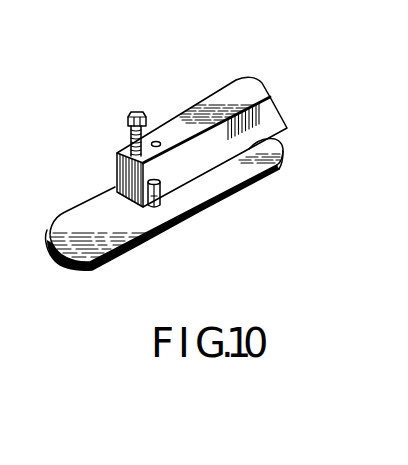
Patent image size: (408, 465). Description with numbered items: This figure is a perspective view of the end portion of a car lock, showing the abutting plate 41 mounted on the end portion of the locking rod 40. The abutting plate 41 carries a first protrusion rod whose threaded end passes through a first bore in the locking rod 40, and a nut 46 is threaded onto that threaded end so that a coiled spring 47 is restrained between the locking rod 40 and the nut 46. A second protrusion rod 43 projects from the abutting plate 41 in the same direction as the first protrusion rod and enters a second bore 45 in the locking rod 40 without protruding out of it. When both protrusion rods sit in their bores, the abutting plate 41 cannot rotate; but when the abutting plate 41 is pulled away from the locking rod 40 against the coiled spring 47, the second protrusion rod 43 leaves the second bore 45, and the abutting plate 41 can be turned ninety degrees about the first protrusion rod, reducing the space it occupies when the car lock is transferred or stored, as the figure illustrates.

The locking rod 40 is at (231, 96).
The abutting plate 41 is at (214, 203).
The second protrusion rod 43 is at (163, 203).
The second bore 45 is at (155, 140).
The nut 46 is at (130, 112).
The coiled spring 47 is at (127, 133).